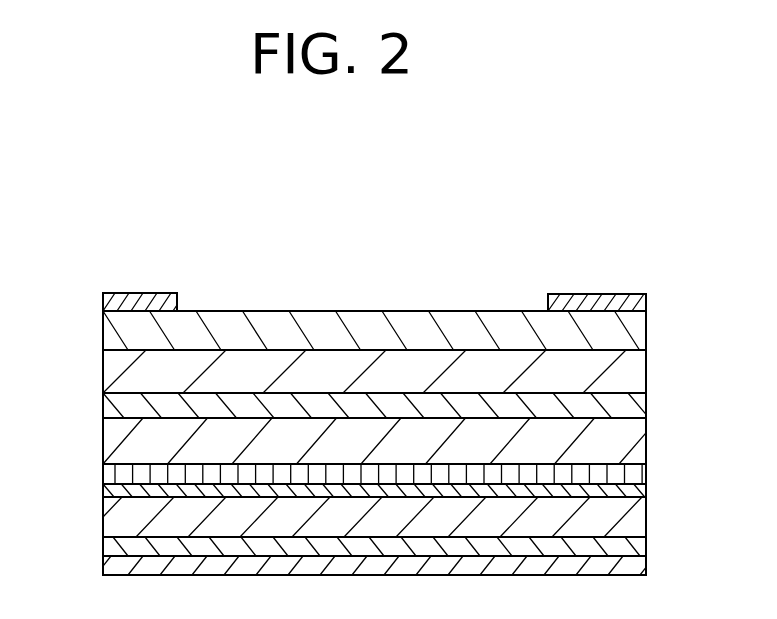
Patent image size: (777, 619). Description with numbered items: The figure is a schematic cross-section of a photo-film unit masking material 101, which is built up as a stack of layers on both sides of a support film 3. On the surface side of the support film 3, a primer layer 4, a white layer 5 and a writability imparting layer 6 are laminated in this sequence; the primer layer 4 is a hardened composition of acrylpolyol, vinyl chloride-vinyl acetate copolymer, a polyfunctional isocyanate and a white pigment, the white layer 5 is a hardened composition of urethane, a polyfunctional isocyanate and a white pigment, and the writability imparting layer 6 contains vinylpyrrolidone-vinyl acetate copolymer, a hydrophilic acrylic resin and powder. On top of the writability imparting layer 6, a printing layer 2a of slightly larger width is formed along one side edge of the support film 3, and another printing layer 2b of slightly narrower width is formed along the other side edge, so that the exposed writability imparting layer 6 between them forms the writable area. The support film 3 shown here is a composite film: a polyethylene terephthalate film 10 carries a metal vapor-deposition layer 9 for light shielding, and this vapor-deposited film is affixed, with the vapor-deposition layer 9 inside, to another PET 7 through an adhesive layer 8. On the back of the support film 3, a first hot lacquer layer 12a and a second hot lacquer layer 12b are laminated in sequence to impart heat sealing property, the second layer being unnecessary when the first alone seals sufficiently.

The masking material 101 is at (224, 300).
The printing layer 2a is at (590, 292).
The printing layer 2b is at (118, 292).
The writability imparting layer 6 is at (640, 324).
The white layer 5 is at (640, 372).
The primer layer 4 is at (638, 407).
The support film 3 is at (358, 490).
The PET 7 is at (110, 437).
The adhesive layer 8 is at (108, 473).
The metal vapor-deposition layer 9 is at (108, 490).
The polyethylene terephthalate film 10 is at (108, 522).
The first hot lacquer layer 12a is at (640, 547).
The second hot lacquer layer 12b is at (641, 568).